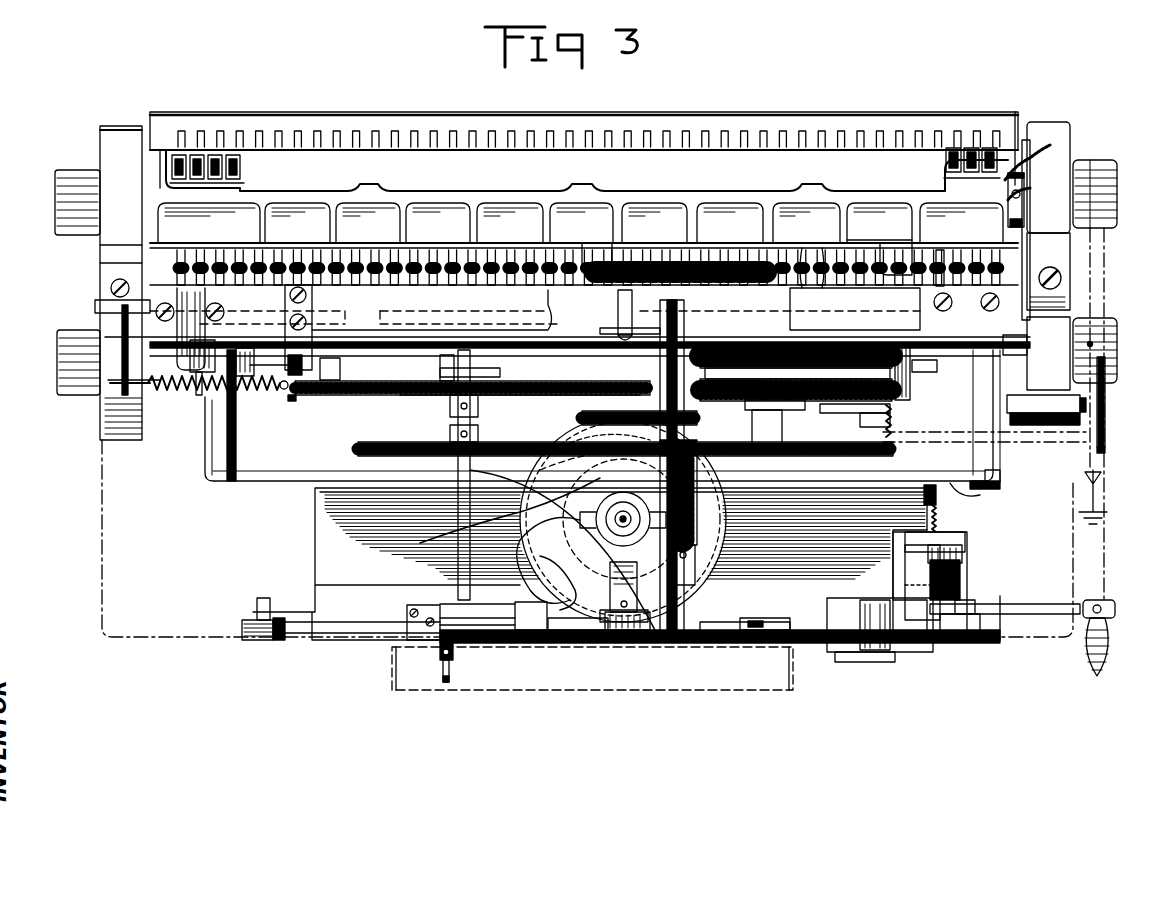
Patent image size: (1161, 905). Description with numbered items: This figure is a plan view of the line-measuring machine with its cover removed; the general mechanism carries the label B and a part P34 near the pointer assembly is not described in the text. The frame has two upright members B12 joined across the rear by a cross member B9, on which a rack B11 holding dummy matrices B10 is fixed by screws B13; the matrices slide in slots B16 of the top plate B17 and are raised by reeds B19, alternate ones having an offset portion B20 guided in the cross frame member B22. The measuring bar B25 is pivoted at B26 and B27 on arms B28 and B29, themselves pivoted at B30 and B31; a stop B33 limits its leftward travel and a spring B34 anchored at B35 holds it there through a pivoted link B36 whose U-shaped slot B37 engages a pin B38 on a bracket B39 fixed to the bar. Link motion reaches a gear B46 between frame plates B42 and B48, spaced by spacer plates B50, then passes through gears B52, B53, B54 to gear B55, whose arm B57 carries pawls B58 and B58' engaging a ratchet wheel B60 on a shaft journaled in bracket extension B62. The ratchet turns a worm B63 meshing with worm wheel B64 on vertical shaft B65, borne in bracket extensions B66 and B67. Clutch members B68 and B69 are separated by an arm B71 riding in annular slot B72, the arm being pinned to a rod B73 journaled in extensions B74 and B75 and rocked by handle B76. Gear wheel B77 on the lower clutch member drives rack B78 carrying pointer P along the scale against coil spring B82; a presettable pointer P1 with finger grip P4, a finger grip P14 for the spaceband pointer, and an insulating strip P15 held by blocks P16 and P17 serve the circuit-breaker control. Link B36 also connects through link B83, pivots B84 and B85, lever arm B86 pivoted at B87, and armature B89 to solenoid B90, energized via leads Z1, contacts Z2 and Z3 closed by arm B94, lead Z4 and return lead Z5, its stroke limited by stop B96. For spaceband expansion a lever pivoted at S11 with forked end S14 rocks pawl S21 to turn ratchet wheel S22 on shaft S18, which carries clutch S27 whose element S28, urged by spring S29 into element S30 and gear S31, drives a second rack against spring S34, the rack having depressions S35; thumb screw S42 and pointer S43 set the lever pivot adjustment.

The platen frame B is at (584, 151).
The cross member B9 is at (755, 250).
The dummy matrices B10 is at (514, 250).
The rack B11 is at (868, 248).
The upright members B12 is at (110, 290).
The screws B13 is at (116, 311).
The slots B16 is at (812, 262).
The top plate B17 is at (942, 262).
The reeds B19 is at (640, 268).
The offset portion B20 is at (626, 323).
The cross frame member B22 is at (682, 260).
The measuring bar B25 is at (535, 304).
The pivot B26 is at (205, 305).
The pivot B27 is at (920, 301).
The arm B28 is at (188, 389).
The arm B29 is at (1000, 303).
The pivot B30 is at (236, 362).
The pivot B31 is at (1005, 359).
The stop B33 is at (180, 356).
The spring B34 is at (200, 393).
The frame connection B35 is at (118, 357).
The pivoted link member B36 is at (278, 387).
The U-shaped slot B37 is at (284, 389).
The pin B38 is at (293, 393).
The angular-shaped bracket B39 is at (312, 302).
The frame element B42 is at (612, 343).
The gear B46 is at (492, 375).
The frame member B48 is at (332, 483).
The spacer plates B50 is at (215, 456).
The gear B52 is at (540, 396).
The gear B53 is at (457, 401).
The gear B54 is at (440, 449).
The gear B55 is at (760, 456).
The arm B57 is at (850, 403).
The pawl B58' is at (853, 424).
The pawl B58 is at (866, 429).
The ratchet wheel B60 is at (600, 419).
The bracket extension B62 is at (725, 506).
The worm B63 is at (735, 541).
The worm wheel B64 is at (570, 513).
The vertical shaft B65 is at (600, 513).
The bracket extension B66 is at (430, 540).
The frame bracket B67 is at (936, 661).
The clutch member B68 is at (630, 571).
The clutch member B69 is at (540, 556).
The arm B71 is at (622, 643).
The annular slot B72 is at (572, 643).
The rod B73 is at (860, 641).
The extension B74 is at (535, 643).
The extension B75 is at (882, 637).
The handle B76 is at (1106, 635).
The gear wheel B77 is at (520, 609).
The rack B78 is at (690, 643).
The coil spring B82 is at (965, 629).
The link B83 is at (455, 367).
The pivot B84 is at (305, 397).
The pivot B85 is at (893, 386).
The lever arm B86 is at (905, 371).
The pivot B87 is at (796, 367).
The armature B89 is at (1075, 301).
The solenoid B90 is at (812, 349).
The arm B94 is at (1020, 201).
The stop B96 is at (340, 365).
The leads Z1 is at (1100, 353).
The switch contact Z2 is at (1018, 166).
The switch contact Z3 is at (1010, 194).
The lead Z4 is at (1092, 344).
The return lead Z5 is at (1098, 464).
The pivot S11 is at (1024, 405).
The forked end S14 is at (1000, 471).
The shaft S18 is at (935, 503).
The pawl S21 is at (998, 483).
The ratchet wheel S22 is at (985, 491).
The clutch S27 is at (962, 576).
The clutch element S28 is at (958, 563).
The spring S29 is at (940, 516).
The clutch element S30 is at (975, 599).
The gear S31 is at (975, 641).
The coil spring S34 is at (250, 626).
The depressions S35 is at (955, 549).
The thumb screw S42 is at (1100, 451).
The pointer S43 is at (1105, 406).
The pointer indicator P is at (730, 649).
The pointer P1 is at (432, 653).
The finger grip P4 is at (452, 661).
The finger grip P14 is at (446, 683).
The insulating strip P15 is at (455, 629).
The insulating block P16 is at (762, 649).
The insulating block P17 is at (408, 619).
The rod P34 is at (380, 629).